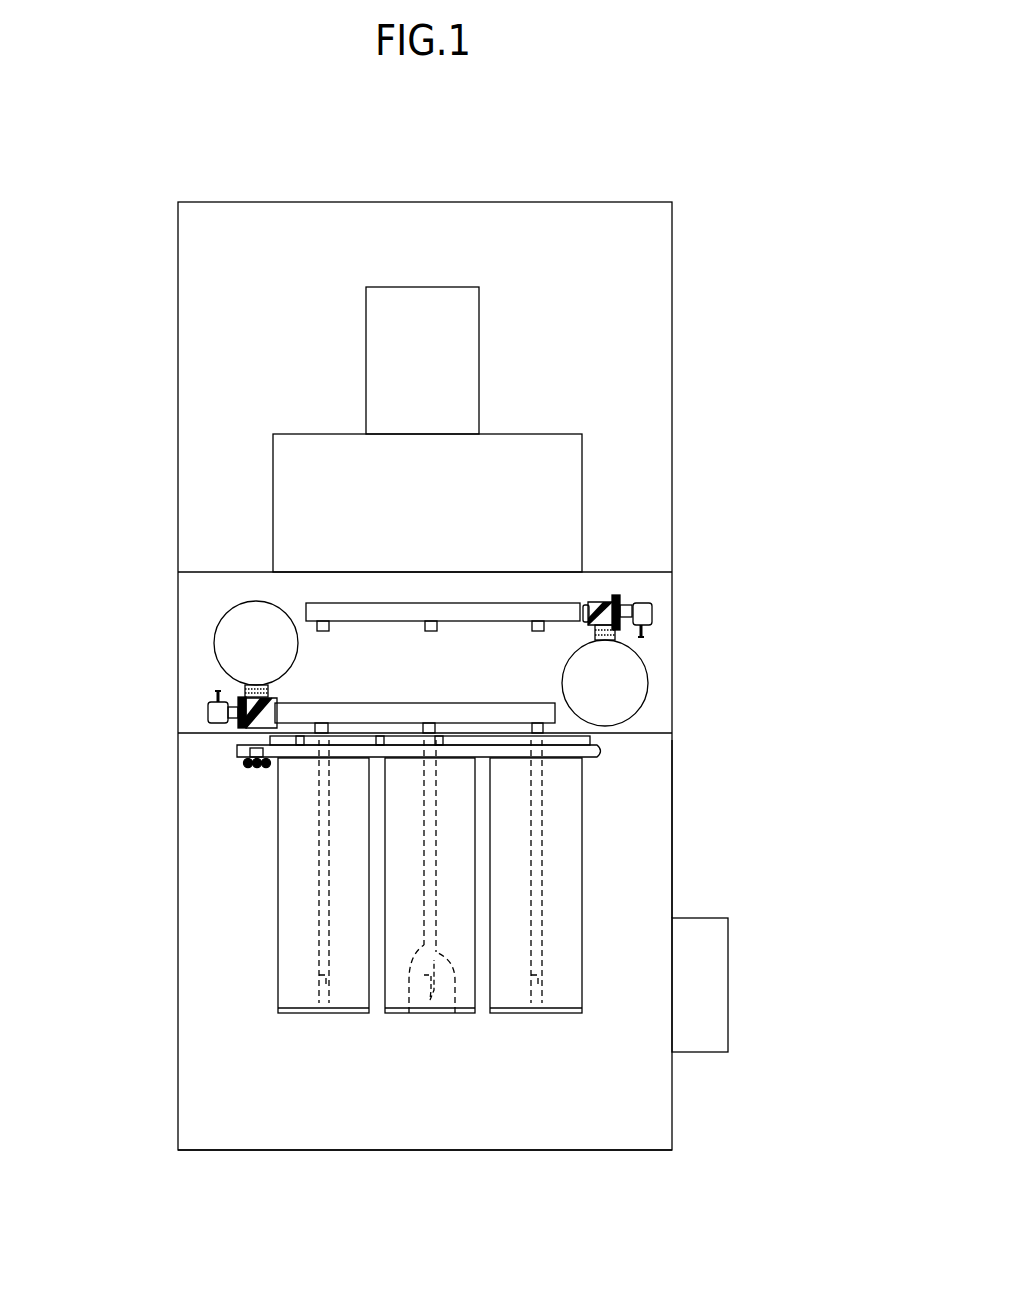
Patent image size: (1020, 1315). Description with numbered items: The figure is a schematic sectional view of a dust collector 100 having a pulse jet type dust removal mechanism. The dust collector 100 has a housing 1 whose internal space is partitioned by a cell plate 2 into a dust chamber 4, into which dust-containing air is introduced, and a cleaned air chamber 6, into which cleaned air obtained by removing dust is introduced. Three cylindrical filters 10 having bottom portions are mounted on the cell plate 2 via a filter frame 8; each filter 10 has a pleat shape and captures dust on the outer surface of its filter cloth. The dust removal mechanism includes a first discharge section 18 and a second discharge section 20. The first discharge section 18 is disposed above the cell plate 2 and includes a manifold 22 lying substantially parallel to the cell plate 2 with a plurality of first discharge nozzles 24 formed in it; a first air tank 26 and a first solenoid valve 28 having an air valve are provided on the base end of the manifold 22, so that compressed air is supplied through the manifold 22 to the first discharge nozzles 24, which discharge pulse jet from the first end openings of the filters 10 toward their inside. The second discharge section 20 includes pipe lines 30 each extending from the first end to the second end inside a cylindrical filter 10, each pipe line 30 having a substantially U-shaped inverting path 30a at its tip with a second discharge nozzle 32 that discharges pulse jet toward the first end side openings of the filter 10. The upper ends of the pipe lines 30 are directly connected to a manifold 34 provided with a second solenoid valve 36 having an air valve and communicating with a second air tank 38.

The dust collector 100 is at (708, 170).
The housing 1 is at (672, 780).
The cell plate 2 is at (643, 733).
The dust chamber 4 is at (190, 1097).
The cleaned air chamber 6 is at (190, 598).
The filter frame 8 is at (588, 760).
The cylindrical filter 10 is at (278, 968).
The first discharge section 18 is at (657, 612).
The second discharge section 20 is at (197, 706).
The manifold 22 is at (458, 603).
The first discharge nozzle 24 is at (430, 633).
The first air tank 26 is at (627, 692).
The first solenoid valve 28 is at (620, 596).
The pipe line 30 is at (318, 892).
The inverting path 30a is at (433, 1013).
The second discharge nozzle 32 is at (455, 1013).
The manifold 34 is at (424, 703).
The second solenoid valve 36 is at (243, 728).
The second air tank 38 is at (226, 653).